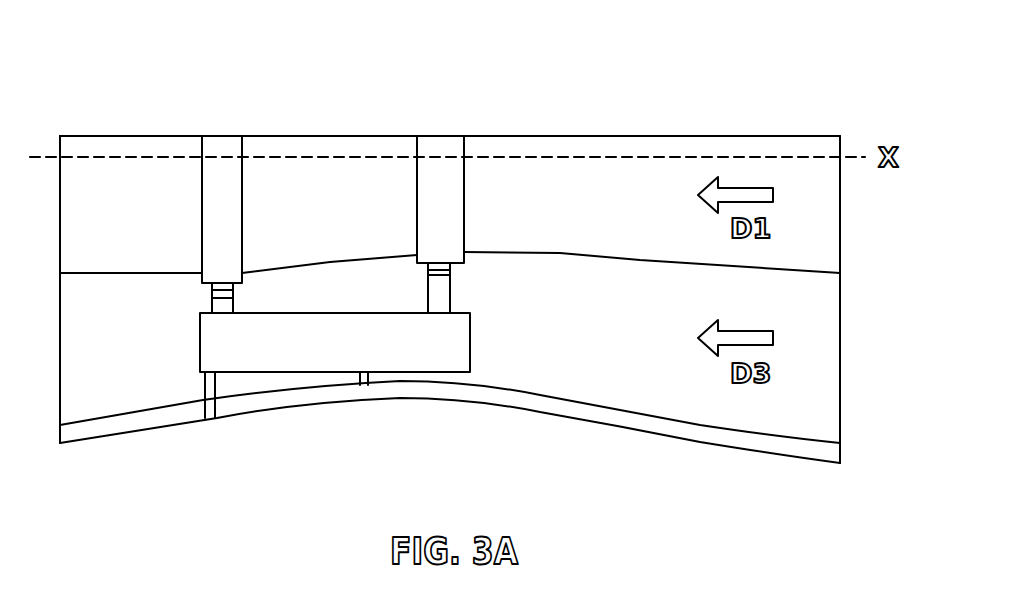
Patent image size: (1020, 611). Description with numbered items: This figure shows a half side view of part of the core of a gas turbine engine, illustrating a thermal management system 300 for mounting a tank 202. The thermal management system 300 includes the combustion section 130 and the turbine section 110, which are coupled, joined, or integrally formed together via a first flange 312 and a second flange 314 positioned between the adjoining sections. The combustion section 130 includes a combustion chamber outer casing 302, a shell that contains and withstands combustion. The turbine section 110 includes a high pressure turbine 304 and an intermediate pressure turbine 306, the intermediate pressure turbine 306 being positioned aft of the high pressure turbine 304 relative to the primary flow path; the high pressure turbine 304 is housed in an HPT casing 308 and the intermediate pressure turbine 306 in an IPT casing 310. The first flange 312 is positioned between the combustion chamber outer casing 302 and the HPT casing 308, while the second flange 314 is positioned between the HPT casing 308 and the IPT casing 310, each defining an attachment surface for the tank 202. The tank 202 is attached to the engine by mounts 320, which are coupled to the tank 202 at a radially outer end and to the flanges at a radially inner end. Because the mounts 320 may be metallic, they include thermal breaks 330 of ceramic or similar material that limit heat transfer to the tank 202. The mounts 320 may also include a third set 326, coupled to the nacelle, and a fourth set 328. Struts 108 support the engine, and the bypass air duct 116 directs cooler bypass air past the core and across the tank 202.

The struts 108 is at (298, 408).
The turbine section 110 is at (233, 100).
The bypass air duct 116 is at (597, 408).
The combustion section 130 is at (667, 115).
The tank 202 is at (470, 352).
The thermal management system 300 is at (182, 445).
The combustion chamber outer casing 302 is at (605, 258).
The high pressure turbine 304 is at (375, 257).
The intermediate pressure turbine 306 is at (110, 274).
The HPT casing 308 is at (337, 135).
The IPT casing 310 is at (122, 135).
The first flange 312 is at (417, 174).
The second flange 314 is at (202, 183).
The mounts 320 is at (234, 301).
The third set 326 is at (205, 392).
The fourth set 328 is at (370, 378).
The thermal breaks 330 is at (218, 288).